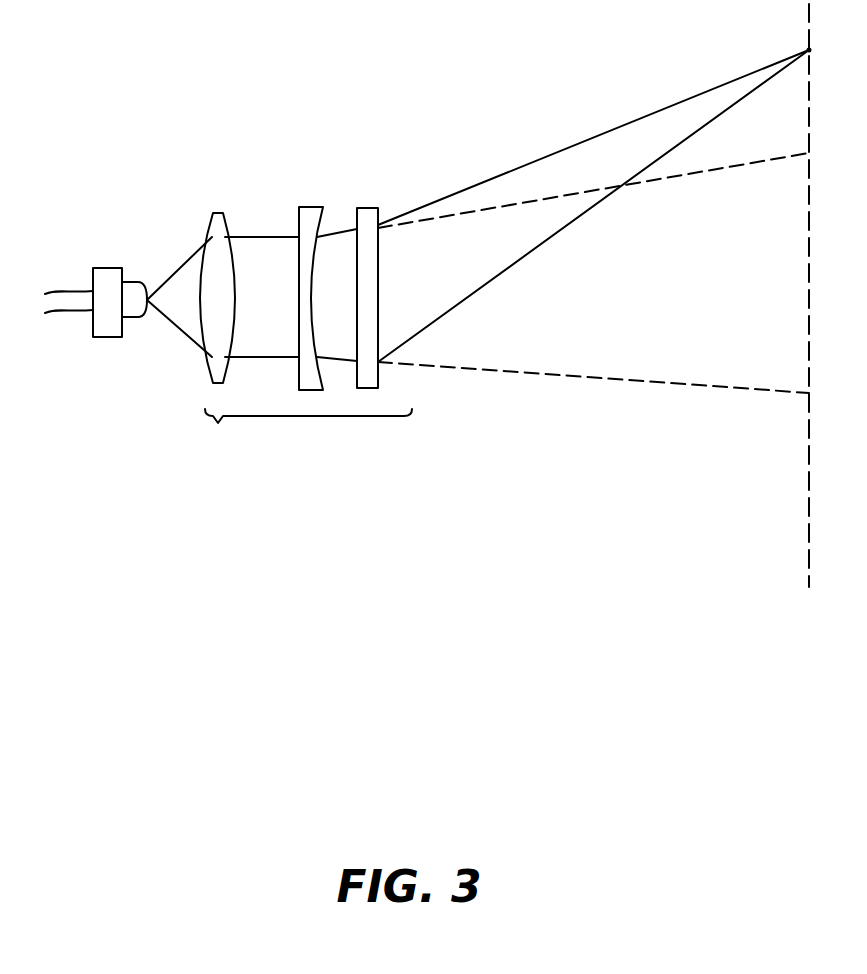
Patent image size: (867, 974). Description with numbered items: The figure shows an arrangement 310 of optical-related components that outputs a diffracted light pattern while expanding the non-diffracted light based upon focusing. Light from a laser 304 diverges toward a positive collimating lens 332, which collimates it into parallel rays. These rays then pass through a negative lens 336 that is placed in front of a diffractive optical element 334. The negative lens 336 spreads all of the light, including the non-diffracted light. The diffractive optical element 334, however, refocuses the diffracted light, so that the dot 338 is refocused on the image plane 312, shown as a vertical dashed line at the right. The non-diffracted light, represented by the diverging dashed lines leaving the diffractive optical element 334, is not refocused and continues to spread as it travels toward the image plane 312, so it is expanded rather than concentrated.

The laser 304 is at (102, 328).
The arrangement 310 is at (308, 435).
The image plane 312 is at (808, 515).
The positive collimating lens 332 is at (215, 240).
The diffractive optical element 334 is at (367, 222).
The negative lens 336 is at (308, 212).
The dot 338 is at (805, 50).